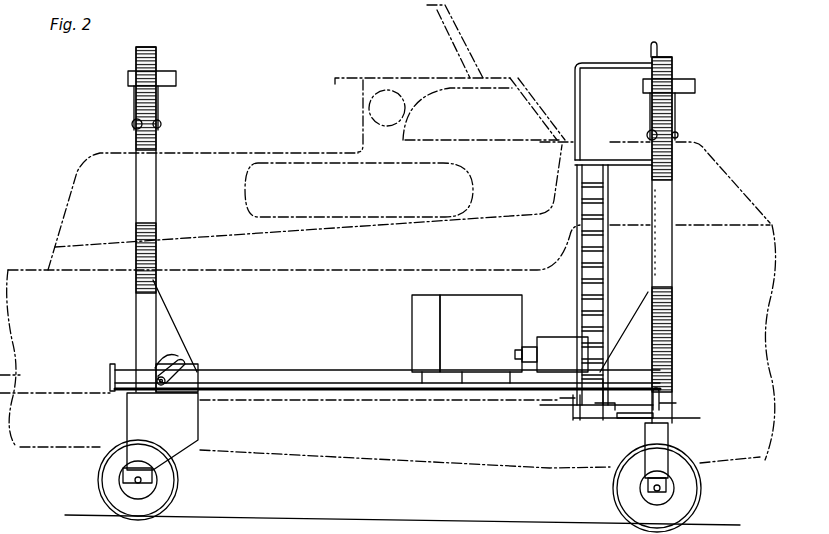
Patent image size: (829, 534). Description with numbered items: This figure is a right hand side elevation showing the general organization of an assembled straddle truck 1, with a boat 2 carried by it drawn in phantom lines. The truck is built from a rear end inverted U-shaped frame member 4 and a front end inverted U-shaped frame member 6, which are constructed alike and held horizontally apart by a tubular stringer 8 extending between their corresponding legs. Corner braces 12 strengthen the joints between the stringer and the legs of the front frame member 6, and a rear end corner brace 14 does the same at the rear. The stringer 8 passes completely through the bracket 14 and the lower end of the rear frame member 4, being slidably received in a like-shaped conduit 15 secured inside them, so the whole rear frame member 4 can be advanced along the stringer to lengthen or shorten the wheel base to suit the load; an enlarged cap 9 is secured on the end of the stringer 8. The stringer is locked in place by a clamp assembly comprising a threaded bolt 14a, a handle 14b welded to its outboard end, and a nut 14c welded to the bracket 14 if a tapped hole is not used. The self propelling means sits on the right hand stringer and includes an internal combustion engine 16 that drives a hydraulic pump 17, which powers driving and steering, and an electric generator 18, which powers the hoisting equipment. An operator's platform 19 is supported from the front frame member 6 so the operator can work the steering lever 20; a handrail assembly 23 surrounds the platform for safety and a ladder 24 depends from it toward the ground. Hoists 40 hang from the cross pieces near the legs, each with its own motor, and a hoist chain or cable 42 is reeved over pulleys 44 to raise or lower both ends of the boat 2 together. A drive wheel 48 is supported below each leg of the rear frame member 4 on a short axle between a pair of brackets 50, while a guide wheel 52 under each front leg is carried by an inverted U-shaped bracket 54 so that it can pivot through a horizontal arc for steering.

The straddle truck 1 is at (85, 122).
The boat 2 is at (53, 243).
The rear end inverted U-shaped frame member 4 is at (156, 208).
The front end inverted U-shaped frame member 6 is at (674, 198).
The stringer 8 is at (276, 370).
The enlarged cap 9 is at (48, 360).
The corner brace 12 is at (622, 332).
The rear end corner brace 14 is at (178, 332).
The threaded bolt 14a is at (181, 350).
The handle 14b is at (190, 366).
The nut 14c is at (164, 393).
The conduit 15 is at (156, 392).
The internal combustion engine 16 is at (474, 330).
The hydraulic pump 17 is at (432, 330).
The electric generator 18 is at (548, 336).
The operator's platform 19 is at (412, 372).
The steering lever 20 is at (657, 48).
The handrail assembly 23 is at (576, 70).
The ladder 24 is at (608, 278).
The hoist 40 is at (177, 78).
The hoist chain or cable 42 is at (160, 100).
The pulley 44 is at (160, 124).
The drive wheel 48 is at (172, 492).
The bracket 50 is at (200, 420).
The guide wheel 52 is at (700, 483).
The inverted U-shaped bracket 54 is at (670, 432).